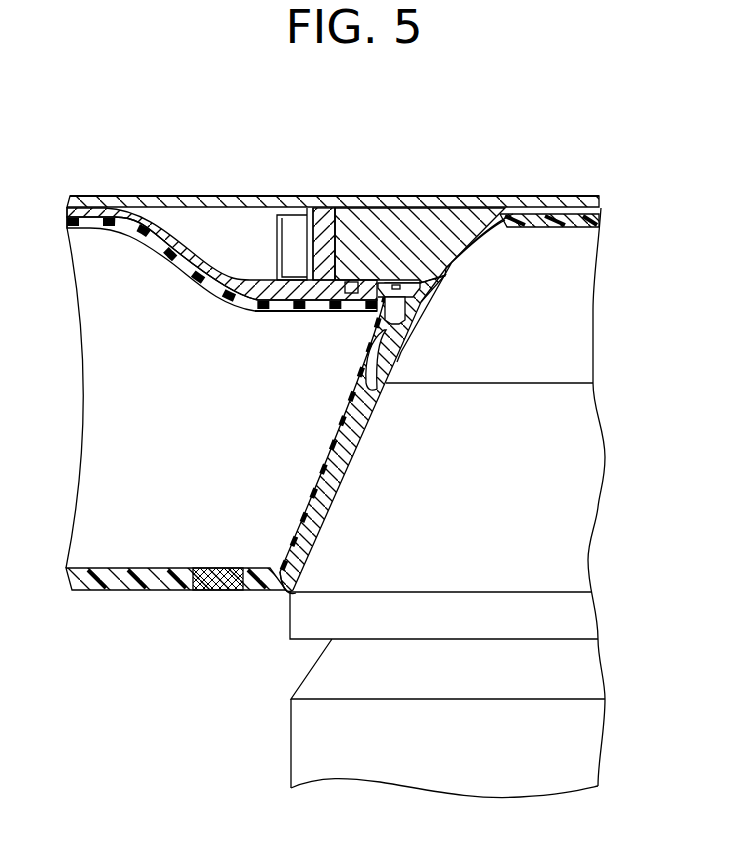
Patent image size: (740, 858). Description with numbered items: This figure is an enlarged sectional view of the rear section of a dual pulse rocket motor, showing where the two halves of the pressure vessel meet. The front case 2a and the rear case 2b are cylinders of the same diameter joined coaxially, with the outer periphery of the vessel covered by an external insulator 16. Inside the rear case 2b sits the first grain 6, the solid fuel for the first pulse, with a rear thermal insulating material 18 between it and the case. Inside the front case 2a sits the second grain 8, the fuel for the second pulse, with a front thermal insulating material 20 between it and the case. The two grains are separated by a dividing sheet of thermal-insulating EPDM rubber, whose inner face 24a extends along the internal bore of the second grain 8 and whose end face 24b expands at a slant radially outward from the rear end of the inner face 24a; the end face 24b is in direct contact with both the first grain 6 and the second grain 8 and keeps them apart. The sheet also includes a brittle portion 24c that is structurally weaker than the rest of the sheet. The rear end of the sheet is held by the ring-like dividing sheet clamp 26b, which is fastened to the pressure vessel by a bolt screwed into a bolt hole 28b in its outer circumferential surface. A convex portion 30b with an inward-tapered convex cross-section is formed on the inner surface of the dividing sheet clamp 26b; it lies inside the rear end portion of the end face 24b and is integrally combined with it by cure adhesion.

The front case 2a is at (140, 214).
The rear case 2b is at (432, 218).
The first grain 6 is at (572, 263).
The second grain 8 is at (115, 387).
The external insulator 16 is at (252, 200).
The rear thermal insulating material 18 is at (548, 220).
The front thermal insulating material 20 is at (93, 220).
The inner face 24a is at (150, 593).
The end face 24b is at (345, 467).
The brittle portion 24c is at (215, 593).
The dividing sheet clamp 26b is at (413, 328).
The bolt hole 28b is at (390, 283).
The convex portion 30b is at (402, 352).